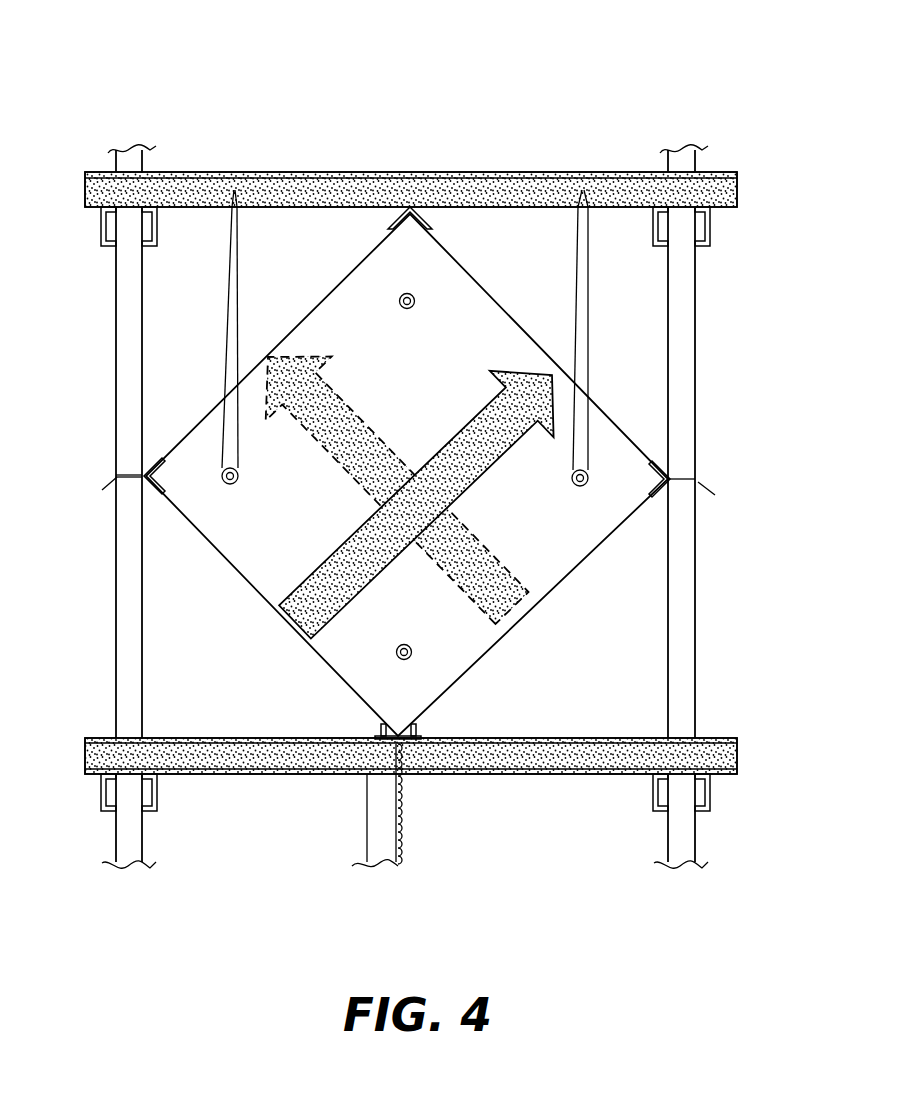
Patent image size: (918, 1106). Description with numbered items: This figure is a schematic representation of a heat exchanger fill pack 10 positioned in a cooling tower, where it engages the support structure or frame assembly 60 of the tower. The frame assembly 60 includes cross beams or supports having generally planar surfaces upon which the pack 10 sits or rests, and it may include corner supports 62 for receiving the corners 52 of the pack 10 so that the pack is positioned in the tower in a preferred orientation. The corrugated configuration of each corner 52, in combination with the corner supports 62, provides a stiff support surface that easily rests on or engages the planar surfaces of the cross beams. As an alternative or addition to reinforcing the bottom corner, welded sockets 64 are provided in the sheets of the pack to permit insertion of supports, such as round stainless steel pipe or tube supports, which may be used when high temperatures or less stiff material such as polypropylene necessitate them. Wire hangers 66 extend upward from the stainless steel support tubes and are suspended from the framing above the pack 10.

The frame assembly 60 is at (454, 440).
The pack 10 is at (480, 287).
The corner 52 is at (170, 477).
The corner support 62 is at (145, 470).
The welded socket 64 is at (401, 297).
The wire hanger 66 is at (238, 237).